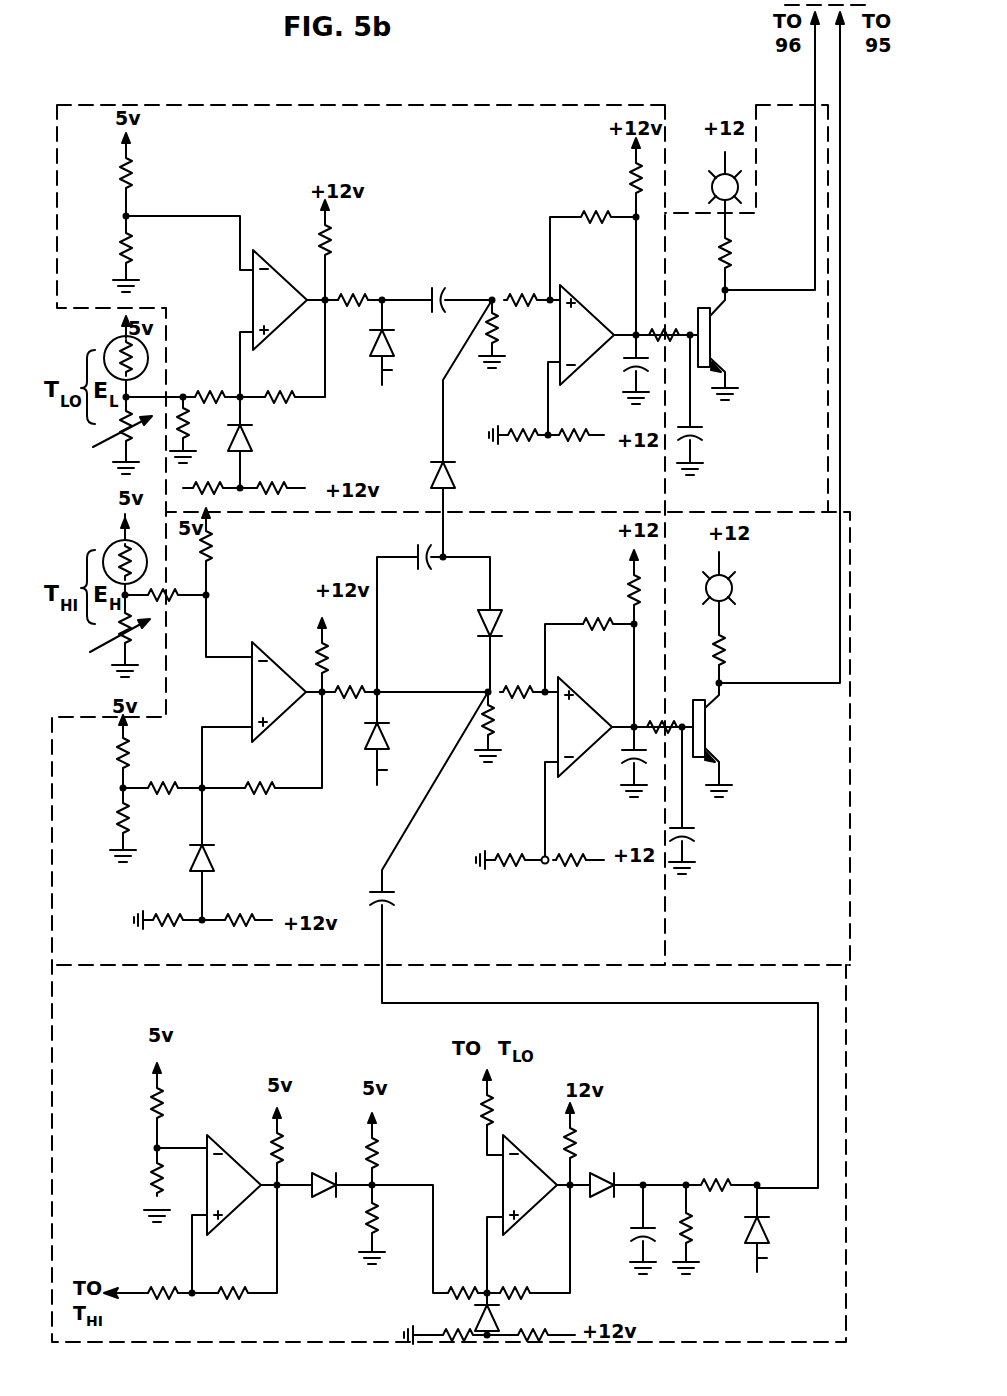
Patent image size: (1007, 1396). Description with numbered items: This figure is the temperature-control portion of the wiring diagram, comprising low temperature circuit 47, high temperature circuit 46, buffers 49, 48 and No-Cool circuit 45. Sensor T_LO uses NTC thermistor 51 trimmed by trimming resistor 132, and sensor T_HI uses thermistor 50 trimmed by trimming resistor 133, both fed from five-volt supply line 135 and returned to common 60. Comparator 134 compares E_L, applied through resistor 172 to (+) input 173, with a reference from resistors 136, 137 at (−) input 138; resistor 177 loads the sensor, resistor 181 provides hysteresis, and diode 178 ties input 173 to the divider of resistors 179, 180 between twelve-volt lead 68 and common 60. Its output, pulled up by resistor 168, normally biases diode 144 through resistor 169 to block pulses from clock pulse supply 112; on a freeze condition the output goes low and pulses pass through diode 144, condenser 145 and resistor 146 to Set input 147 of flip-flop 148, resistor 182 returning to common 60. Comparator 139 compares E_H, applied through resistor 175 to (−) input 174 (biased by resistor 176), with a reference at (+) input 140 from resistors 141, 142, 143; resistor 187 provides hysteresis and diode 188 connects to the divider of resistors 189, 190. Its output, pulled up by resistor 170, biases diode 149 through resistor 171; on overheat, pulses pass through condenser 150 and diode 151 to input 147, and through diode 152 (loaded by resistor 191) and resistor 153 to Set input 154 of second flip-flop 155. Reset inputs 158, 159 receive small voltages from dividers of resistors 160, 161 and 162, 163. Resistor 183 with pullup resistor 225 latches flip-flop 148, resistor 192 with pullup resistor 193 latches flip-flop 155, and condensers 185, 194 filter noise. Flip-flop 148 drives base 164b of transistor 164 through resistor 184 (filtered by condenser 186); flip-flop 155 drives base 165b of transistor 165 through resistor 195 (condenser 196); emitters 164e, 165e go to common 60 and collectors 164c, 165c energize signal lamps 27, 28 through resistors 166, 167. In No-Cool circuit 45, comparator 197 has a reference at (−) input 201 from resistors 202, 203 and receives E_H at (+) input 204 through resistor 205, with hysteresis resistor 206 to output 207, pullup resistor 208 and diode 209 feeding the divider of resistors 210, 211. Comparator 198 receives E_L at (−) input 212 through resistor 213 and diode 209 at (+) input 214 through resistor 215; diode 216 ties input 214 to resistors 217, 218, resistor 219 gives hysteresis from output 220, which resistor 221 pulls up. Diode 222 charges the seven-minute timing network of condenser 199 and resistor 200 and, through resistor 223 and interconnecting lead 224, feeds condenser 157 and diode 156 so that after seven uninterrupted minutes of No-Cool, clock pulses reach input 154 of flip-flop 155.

The signal light 27 is at (712, 186).
The signal light 28 is at (735, 582).
The No-Cool circuit 45 is at (846, 1140).
The high temperature circuit 46 is at (52, 920).
The low temperature circuit 47 is at (303, 104).
The buffer transistor 48 is at (850, 808).
The second buffer transistor 49 is at (828, 440).
The NTC thermistor 50 is at (112, 551).
The NTC thermistor 51 is at (148, 356).
The common 60 is at (180, 451).
The 12-volt power supply 68 is at (330, 222).
The clock pulse supply 112 is at (392, 370).
The trimming resistor 132 is at (104, 438).
The trimming resistor 133 is at (110, 640).
The comparator 134 is at (279, 266).
The 5-volt power supply line 135 is at (130, 148).
The 47 kilohm resistor 136 is at (133, 180).
The 15 kilohm resistor 137 is at (134, 253).
The (−) input of comparator 134 138 is at (238, 273).
The comparator 139 is at (286, 660).
The (+) input of comparator 139 140 is at (254, 730).
The 15 kilohm resistor 141 is at (118, 759).
The 15 kilohm resistor 142 is at (118, 818).
The 10 kilohm resistor 143 is at (178, 766).
The diode 144 is at (394, 334).
The 0.01 microfarad condenser 145 is at (444, 294).
The 10 kilohm resistor 146 is at (524, 294).
The Set input of flip-flop 148 147 is at (556, 305).
The flip-flop 148 is at (587, 308).
The diode 149 is at (390, 736).
The 0.01 microfarad condenser 150 is at (422, 560).
The diode 151 is at (449, 484).
The diode 152 is at (494, 610).
The 10 kilohm resistor 153 is at (516, 688).
The Set input of flip-flop 155 154 is at (494, 716).
The second flip-flop 155 is at (590, 693).
The diode 156 is at (767, 1232).
The 0.01 microfarad condenser 157 is at (386, 906).
The Reset input of flip-flop 148 158 is at (548, 366).
The Reset input of flip-flop 155 159 is at (544, 762).
The 220 kilohm resistor 160 is at (588, 412).
The 10 kilohm resistor 161 is at (522, 442).
The 220 kilohm resistor 162 is at (574, 866).
The 10 kilohm resistor 163 is at (512, 866).
The transistor 164 is at (712, 336).
The base of transistor 164 164b is at (700, 308).
The collector of transistor 164 164c is at (716, 316).
The emitter of transistor 164 164e is at (716, 356).
The transistor 165 is at (706, 726).
The base of transistor 165 165b is at (694, 720).
The collector of transistor 165 165c is at (708, 710).
The emitter of transistor 165 165e is at (710, 747).
The 2.2 kilohm resistor 166 is at (731, 248).
The 2.2 kilohm resistor 167 is at (724, 650).
The 10 kilohm resistor 168 is at (332, 252).
The 1 megohm resistor 169 is at (353, 294).
The 10 kilohm resistor 170 is at (325, 650).
The 1 megohm resistor 171 is at (350, 698).
The 10 kilohm resistor 172 is at (218, 362).
The (+) input of comparator 134 173 is at (251, 330).
The (−) input of comparator 139 174 is at (252, 660).
The 10 kilohm resistor 175 is at (194, 599).
The 1 megohm resistor 176 is at (213, 559).
The 100 kilohm resistor 177 is at (189, 424).
The diode 178 is at (254, 438).
The 10 kilohm resistor 179 is at (228, 470).
The 100 kilohm resistor 180 is at (270, 486).
The 10 megohm resistor 181 is at (284, 392).
The 1 kilohm resistor 182 is at (498, 321).
The 120 kilohm resistor 183 is at (591, 214).
The 47 kilohm resistor 184 is at (666, 330).
The 0.001 microfarad condenser 185 is at (630, 368).
The 0.001 microfarad condenser 186 is at (701, 430).
The 10 megohm resistor 187 is at (270, 794).
The diode 188 is at (217, 858).
The 10 kilohm resistor 189 is at (182, 926).
The 100 kilohm resistor 190 is at (242, 914).
The 1 kilohm resistor 191 is at (484, 752).
The 120 kilohm resistor 192 is at (598, 618).
The 10 kilohm pullup resistor 193 is at (640, 590).
The 0.001 microfarad noise filter condenser 194 is at (628, 760).
The 47 kilohm resistor 195 is at (658, 722).
The 0.001 microfarad noise filter condenser 196 is at (688, 830).
The comparator 197 is at (236, 1162).
The comparator 198 is at (530, 1164).
The 22 microfarad condenser 199 is at (636, 1232).
The 10 megohm resistor 200 is at (690, 1228).
The (−) input of comparator 197 201 is at (206, 1148).
The 47 kilohm resistor 202 is at (148, 1106).
The 15 kilohm resistor 203 is at (146, 1177).
The (+) input of comparator 197 204 is at (203, 1220).
The 10 kilohm resistor 205 is at (162, 1296).
The 10 megohm resistor 206 is at (240, 1296).
The output of comparator 197 207 is at (287, 1186).
The 33 kilohm pullup resistor 208 is at (283, 1151).
The diode 209 is at (328, 1198).
The 15 megohm resistor 210 is at (379, 1152).
The 15 kilohm resistor 211 is at (377, 1224).
The (−) input of comparator 198 212 is at (498, 1160).
The 10 kilohm resistor 213 is at (493, 1104).
The (+) input of comparator 198 214 is at (495, 1213).
The 10 kilohm resistor 215 is at (456, 1290).
The diode 216 is at (482, 1322).
The 10 kilohm resistor 217 is at (428, 1330).
The 100 kilohm resistor 218 is at (550, 1318).
The 10 megohm resistor 219 is at (514, 1290).
The comparator output 220 is at (554, 1192).
The 10 kilohm pullup resistor 221 is at (574, 1148).
The diode 222 is at (609, 1181).
The 1 megohm resistor 223 is at (717, 1182).
The interconnecting lead 224 is at (714, 1005).
The 10 kilohm output pullup resistor 225 is at (632, 178).